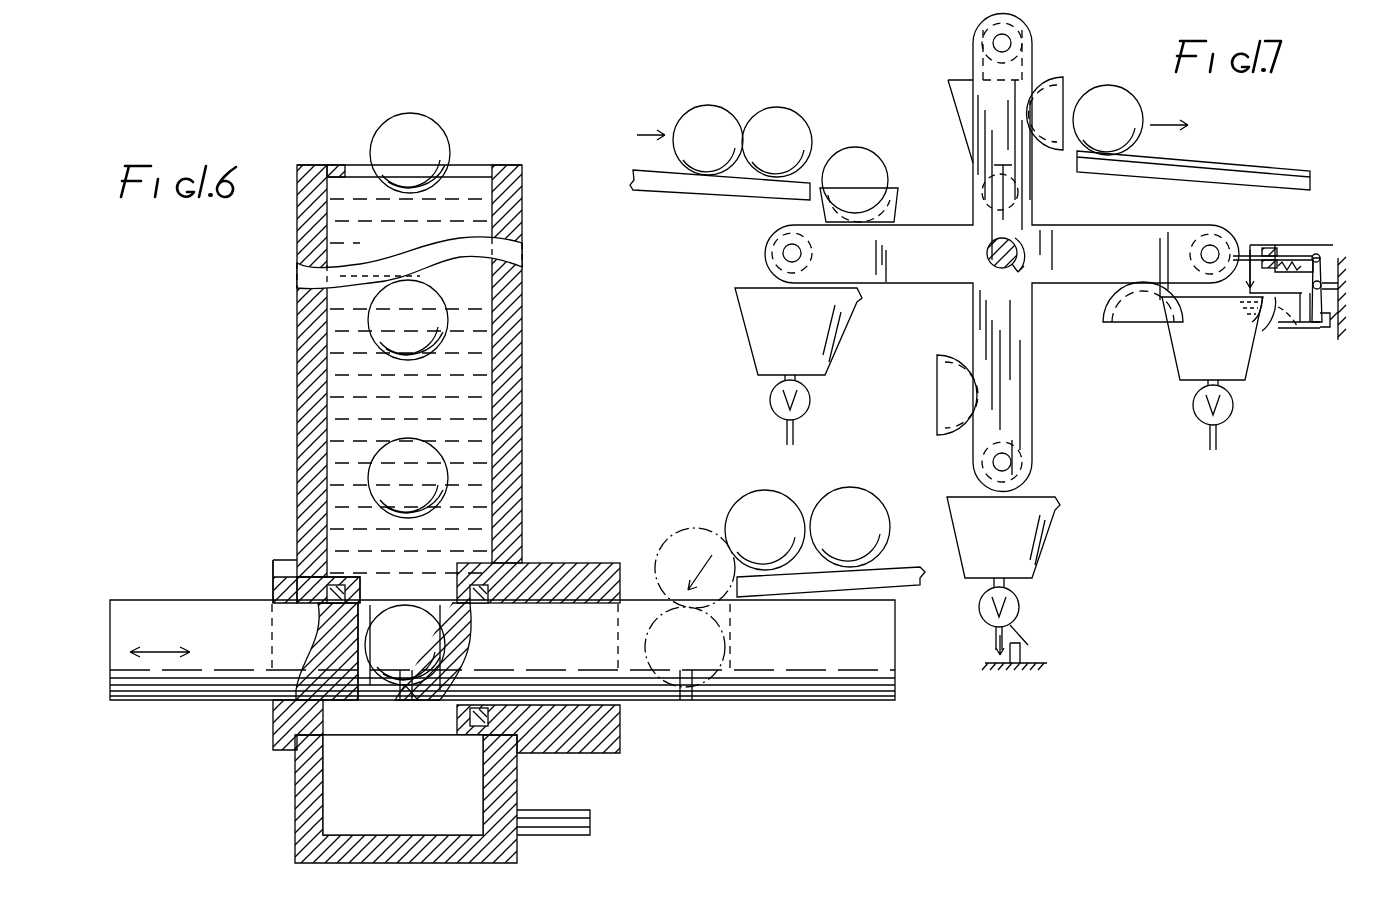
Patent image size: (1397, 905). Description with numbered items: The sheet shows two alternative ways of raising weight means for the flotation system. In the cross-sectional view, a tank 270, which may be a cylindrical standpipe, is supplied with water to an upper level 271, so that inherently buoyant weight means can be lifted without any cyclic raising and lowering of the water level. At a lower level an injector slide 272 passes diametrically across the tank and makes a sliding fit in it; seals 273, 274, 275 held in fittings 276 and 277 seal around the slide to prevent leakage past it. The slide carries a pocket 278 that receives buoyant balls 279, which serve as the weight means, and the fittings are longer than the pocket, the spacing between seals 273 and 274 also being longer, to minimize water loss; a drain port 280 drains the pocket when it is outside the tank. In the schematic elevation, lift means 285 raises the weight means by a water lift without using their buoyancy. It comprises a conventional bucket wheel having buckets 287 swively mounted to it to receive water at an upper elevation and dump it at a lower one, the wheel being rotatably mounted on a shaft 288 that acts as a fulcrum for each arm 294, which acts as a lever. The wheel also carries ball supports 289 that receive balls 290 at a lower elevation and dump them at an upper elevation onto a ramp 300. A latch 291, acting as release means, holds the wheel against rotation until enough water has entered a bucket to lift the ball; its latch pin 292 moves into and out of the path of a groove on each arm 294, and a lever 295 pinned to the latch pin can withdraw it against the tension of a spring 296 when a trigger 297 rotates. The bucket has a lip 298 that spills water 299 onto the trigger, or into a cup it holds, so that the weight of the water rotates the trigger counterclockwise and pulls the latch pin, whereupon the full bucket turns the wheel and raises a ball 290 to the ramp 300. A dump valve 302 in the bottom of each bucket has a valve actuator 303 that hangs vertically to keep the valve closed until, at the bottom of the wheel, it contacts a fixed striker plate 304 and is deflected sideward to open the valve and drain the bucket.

In FIG. 16, the tank 270 is at (522, 412).
In FIG. 16, the upper level 271 is at (470, 172).
In FIG. 16, the injector slide 272 is at (133, 601).
In FIG. 16, the seal 273 is at (305, 590).
In FIG. 16, the seal 274 is at (545, 754).
In FIG. 16, the seal 275 is at (620, 740).
In FIG. 16, the fitting 276 is at (285, 560).
In FIG. 16, the fitting 277 is at (573, 563).
In FIG. 16, the pocket 278 is at (445, 606).
In FIG. 16, the buoyant ball 279 is at (432, 487).
In FIG. 16, the drain port 280 is at (402, 690).
In FIG. 17, the lift means 285 is at (1046, 414).
In FIG. 17, the bucket 287 is at (1176, 375).
In FIG. 17, the shaft 288 is at (990, 278).
In FIG. 17, the ball support 289 is at (898, 206).
In FIG. 17, the ball 290 is at (868, 154).
In FIG. 17, the latch 291 is at (1357, 203).
In FIG. 17, the latch pin 292 is at (1277, 240).
In FIG. 17, the arm 294 is at (1114, 224).
In FIG. 17, the lever 295 is at (1321, 259).
In FIG. 17, the spring 296 is at (1305, 330).
In FIG. 17, the trigger 297 is at (1318, 330).
In FIG. 17, the lip 298 is at (1058, 508).
In FIG. 17, the water 299 is at (1268, 330).
In FIG. 17, the ramp 300 is at (1222, 166).
In FIG. 17, the dump valve 302 is at (1200, 426).
In FIG. 17, the valve actuator 303 is at (1210, 452).
In FIG. 17, the striker plate 304 is at (1030, 657).